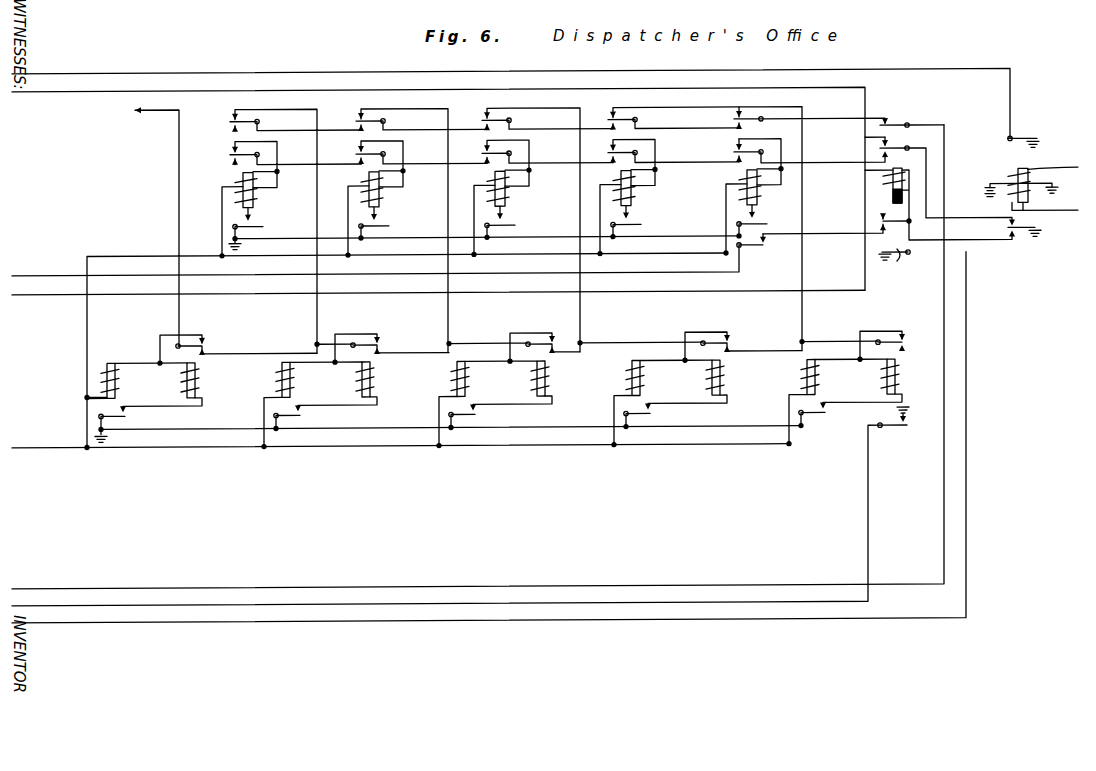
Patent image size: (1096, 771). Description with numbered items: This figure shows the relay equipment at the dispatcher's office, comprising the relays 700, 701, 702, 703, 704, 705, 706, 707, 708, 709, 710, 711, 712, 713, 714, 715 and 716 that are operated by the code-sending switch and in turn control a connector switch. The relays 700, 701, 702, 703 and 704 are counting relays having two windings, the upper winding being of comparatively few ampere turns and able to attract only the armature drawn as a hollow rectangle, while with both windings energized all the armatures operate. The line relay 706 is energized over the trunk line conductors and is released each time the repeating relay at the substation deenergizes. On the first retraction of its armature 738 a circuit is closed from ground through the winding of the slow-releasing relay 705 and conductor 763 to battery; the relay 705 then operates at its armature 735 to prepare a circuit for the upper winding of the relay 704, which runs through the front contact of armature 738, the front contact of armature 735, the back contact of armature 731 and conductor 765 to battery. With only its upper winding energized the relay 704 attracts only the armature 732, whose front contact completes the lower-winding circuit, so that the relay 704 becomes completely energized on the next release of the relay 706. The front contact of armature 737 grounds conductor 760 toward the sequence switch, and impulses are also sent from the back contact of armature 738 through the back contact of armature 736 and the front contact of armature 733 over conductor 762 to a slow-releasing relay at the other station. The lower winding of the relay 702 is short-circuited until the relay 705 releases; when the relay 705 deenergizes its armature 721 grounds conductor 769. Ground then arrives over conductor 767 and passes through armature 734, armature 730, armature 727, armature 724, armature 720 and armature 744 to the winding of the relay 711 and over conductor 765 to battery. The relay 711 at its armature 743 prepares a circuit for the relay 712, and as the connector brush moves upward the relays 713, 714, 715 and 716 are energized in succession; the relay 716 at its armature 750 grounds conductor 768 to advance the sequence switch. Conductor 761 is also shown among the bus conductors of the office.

The counting relay 700 is at (257, 202).
The counting relay 701 is at (383, 202).
The counting relay 702 is at (509, 202).
The counting relay 703 is at (635, 202).
The counting relay 704 is at (761, 202).
The slow-releasing relay 705 is at (893, 200).
The line relay 706 is at (1031, 178).
The relay 707 is at (117, 389).
The relay 708 is at (197, 389).
The relay 709 is at (292, 389).
The relay 710 is at (372, 389).
The relay 711 is at (467, 389).
The relay 712 is at (547, 389).
The relay 713 is at (642, 389).
The relay 714 is at (722, 389).
The relay 715 is at (817, 389).
The relay 716 is at (897, 389).
The armature 720 is at (363, 119).
The armature 721 is at (901, 269).
The armature 724 is at (489, 119).
The armature 727 is at (615, 119).
The armature 730 is at (741, 119).
The armature 731 is at (736, 148).
The armature 732 is at (769, 228).
The armature 733 is at (750, 252).
The armature 734 is at (896, 128).
The armature 735 is at (897, 148).
The armature 736 is at (882, 224).
The armature 737 is at (1027, 140).
The armature 738 is at (1024, 243).
The armature 743 is at (465, 420).
The armature 744 is at (552, 341).
The armature 750 is at (893, 433).
The conductor 760 is at (30, 75).
The conductor 761 is at (29, 94).
The conductor 762 is at (31, 267).
The conductor 763 is at (31, 298).
The conductor 765 is at (28, 442).
The conductor 767 is at (29, 587).
The conductor 768 is at (40, 606).
The conductor 769 is at (62, 623).